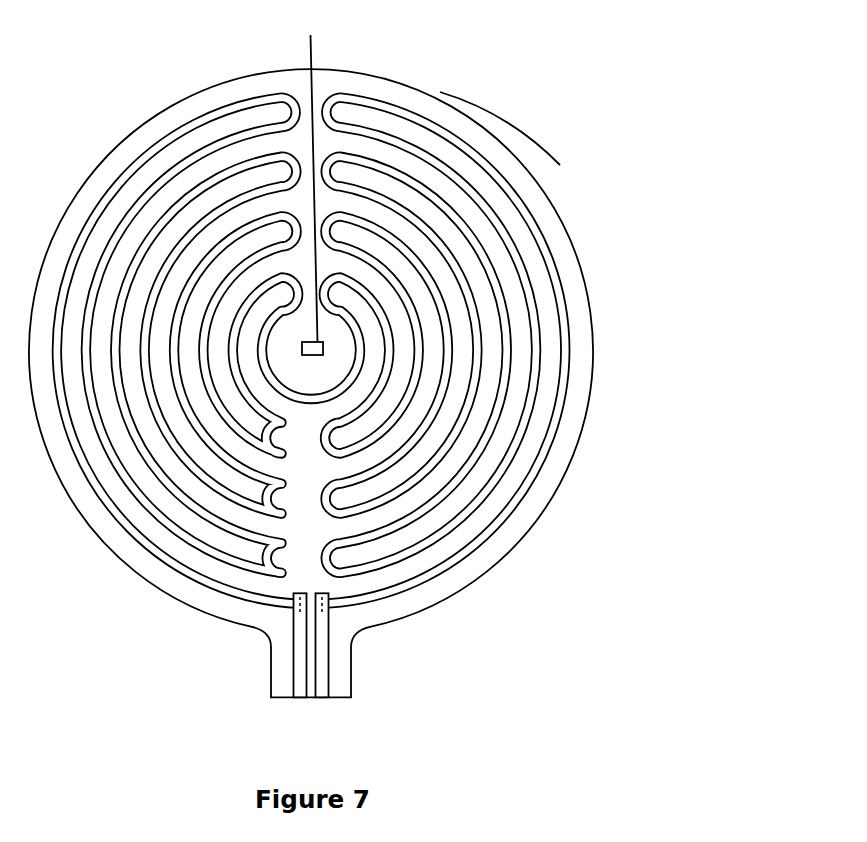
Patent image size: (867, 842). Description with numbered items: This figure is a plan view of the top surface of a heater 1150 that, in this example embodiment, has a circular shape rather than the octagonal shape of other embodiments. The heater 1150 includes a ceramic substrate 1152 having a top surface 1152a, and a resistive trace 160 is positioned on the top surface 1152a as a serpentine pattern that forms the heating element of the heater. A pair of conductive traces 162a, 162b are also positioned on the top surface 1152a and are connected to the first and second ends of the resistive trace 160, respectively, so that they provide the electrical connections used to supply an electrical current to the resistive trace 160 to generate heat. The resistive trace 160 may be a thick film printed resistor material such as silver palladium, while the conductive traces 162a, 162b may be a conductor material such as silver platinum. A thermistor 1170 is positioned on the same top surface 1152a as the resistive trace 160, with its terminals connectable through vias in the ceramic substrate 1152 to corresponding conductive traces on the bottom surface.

The heater 1150 is at (378, 353).
The ceramic substrate 1152 is at (592, 327).
The top surface 1152a is at (512, 162).
The resistive trace 160 is at (556, 255).
The conductive trace 162a is at (300, 667).
The conductive trace 162b is at (322, 683).
The thermistor 1170 is at (316, 182).